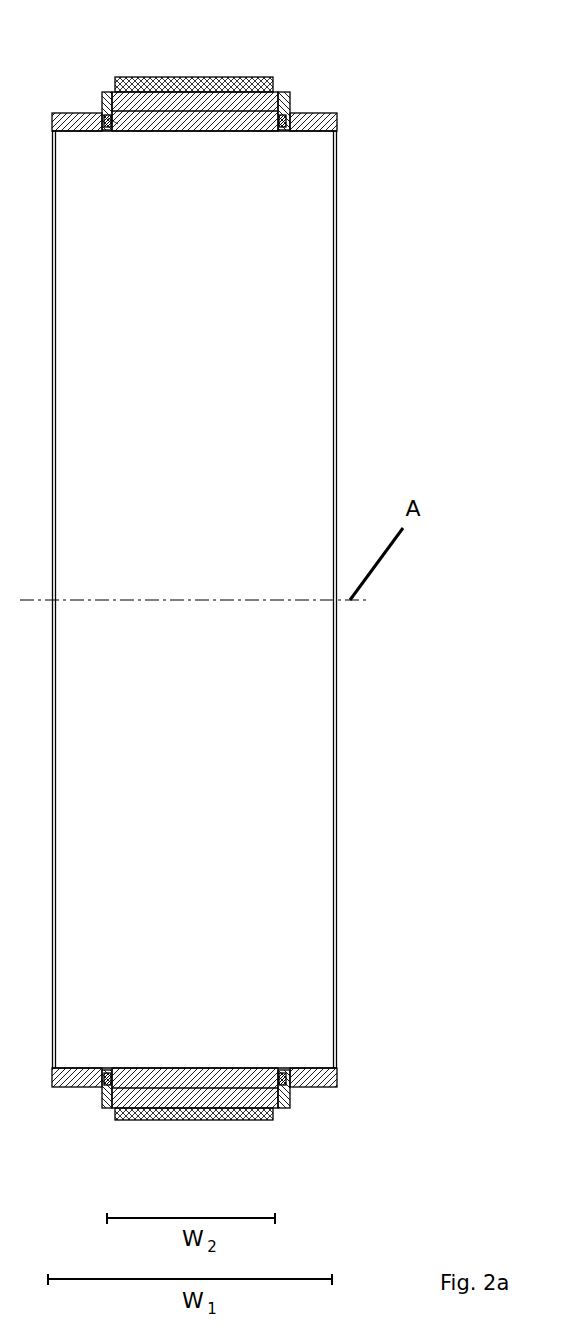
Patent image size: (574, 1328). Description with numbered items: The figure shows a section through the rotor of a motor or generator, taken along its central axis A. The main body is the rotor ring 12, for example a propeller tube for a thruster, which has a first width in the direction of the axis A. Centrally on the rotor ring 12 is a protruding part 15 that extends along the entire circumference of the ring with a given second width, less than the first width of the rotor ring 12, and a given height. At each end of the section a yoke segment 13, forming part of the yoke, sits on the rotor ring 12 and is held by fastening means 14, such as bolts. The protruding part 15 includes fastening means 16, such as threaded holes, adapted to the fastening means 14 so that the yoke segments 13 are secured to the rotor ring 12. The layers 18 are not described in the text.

The rotor ring 12 is at (323, 125).
The yoke segment 13 is at (262, 100).
The fastening means 14 is at (106, 118).
The protruding part 15 is at (208, 115).
The fastening means 16 is at (118, 124).
The cover layer 18 is at (147, 83).